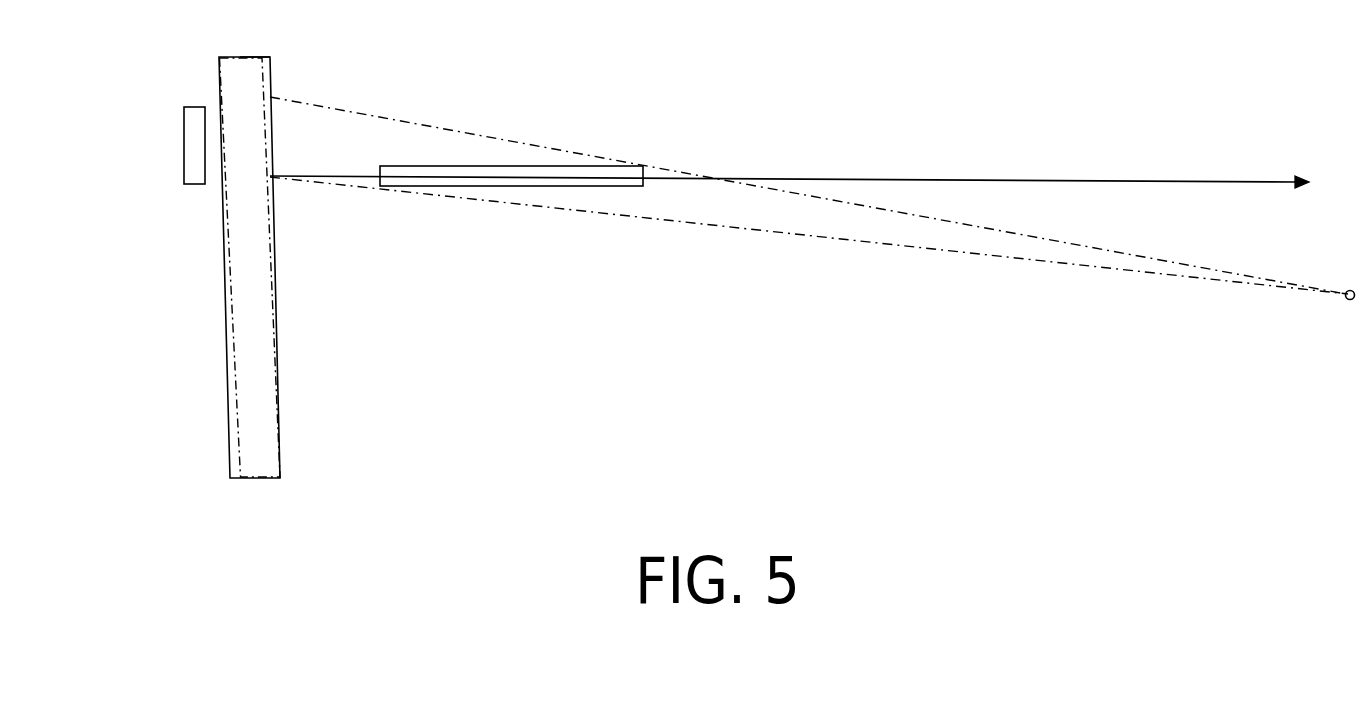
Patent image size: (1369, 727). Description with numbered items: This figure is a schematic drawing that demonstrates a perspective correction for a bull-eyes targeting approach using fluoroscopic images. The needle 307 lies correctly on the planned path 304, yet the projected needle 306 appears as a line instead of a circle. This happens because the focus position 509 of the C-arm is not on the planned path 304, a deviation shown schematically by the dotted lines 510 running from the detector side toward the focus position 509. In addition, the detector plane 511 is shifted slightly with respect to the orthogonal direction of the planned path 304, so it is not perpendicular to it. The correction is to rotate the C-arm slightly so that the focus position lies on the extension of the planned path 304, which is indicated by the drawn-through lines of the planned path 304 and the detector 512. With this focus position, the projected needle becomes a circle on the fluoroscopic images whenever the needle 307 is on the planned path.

The planned path 304 is at (960, 178).
The projected needle 306 is at (184, 147).
The needle 307 is at (570, 166).
The focus position 509 is at (1350, 290).
The dotted lines 510 is at (810, 236).
The detector plane 511 is at (276, 372).
The detector 512 is at (271, 72).